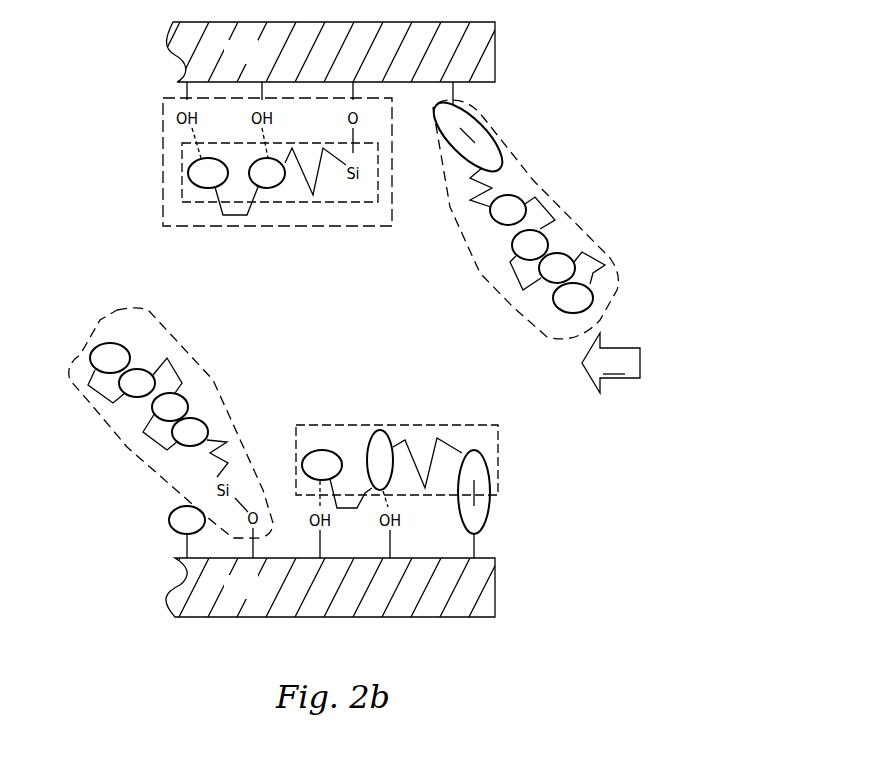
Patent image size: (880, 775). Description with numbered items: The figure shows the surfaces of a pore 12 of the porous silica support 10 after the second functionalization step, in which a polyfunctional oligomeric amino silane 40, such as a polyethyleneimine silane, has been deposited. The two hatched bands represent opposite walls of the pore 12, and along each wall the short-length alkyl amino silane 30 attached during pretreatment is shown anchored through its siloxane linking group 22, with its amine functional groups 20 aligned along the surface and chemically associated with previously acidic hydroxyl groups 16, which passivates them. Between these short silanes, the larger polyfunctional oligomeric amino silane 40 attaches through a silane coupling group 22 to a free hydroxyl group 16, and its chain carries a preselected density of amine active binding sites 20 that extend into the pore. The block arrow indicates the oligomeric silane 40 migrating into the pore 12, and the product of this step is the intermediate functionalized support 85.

The porous support 10 is at (252, 63).
The pore 12 is at (148, 282).
The hydroxyl groups 16 is at (172, 510).
The amine functional groups 20 is at (188, 176).
The siloxane linking group 22 is at (489, 127).
The short-length alkyl amino silane 30 is at (163, 138).
The polyfunctional oligomeric amino silane 40 is at (493, 280).
The intermediate functionalized support 85 is at (100, 62).